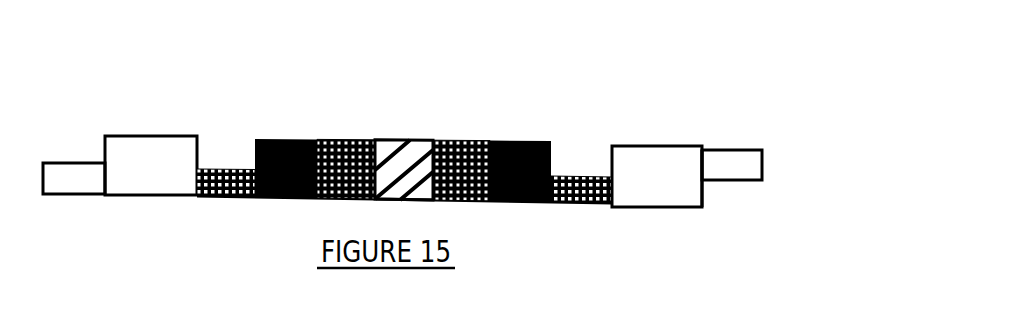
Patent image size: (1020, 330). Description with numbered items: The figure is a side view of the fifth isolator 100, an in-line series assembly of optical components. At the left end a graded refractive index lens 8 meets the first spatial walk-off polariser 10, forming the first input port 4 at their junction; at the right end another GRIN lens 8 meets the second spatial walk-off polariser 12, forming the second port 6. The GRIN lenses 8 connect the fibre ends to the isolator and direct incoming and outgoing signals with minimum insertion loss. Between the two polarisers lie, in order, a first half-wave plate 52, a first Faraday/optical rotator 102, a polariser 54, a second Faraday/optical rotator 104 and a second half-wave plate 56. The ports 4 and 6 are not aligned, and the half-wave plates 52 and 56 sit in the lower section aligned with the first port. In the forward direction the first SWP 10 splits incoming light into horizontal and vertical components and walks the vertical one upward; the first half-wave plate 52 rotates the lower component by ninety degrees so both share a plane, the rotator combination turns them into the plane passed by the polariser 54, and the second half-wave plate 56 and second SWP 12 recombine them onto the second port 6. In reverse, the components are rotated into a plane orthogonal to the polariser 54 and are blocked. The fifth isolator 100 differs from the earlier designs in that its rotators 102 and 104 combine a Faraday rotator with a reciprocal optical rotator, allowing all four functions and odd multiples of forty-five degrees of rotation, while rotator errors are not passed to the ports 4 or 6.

The fifth isolator 100 is at (728, 80).
The first input port 4 is at (126, 217).
The second input port 6 is at (681, 238).
The graded refractive index lens 8 is at (65, 120).
The first spatial walk-off polariser 10 is at (155, 136).
The second spatial walk-off polariser 12 is at (681, 135).
The first half-wave plate 52 is at (240, 125).
The polariser 54 is at (405, 130).
The second half-wave plate 56 is at (565, 135).
The Faraday/optical rotator 102 is at (317, 128).
The Faraday/optical rotator 104 is at (492, 130).